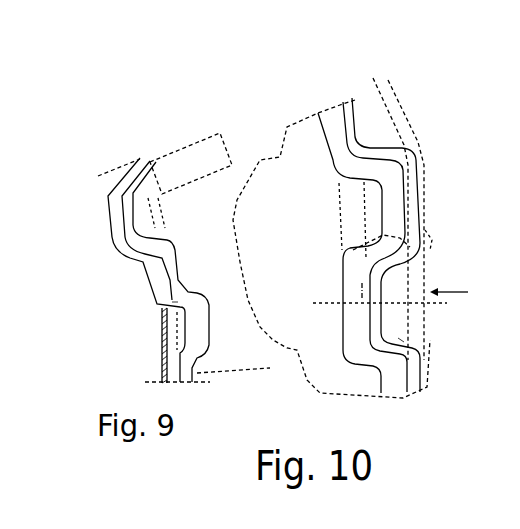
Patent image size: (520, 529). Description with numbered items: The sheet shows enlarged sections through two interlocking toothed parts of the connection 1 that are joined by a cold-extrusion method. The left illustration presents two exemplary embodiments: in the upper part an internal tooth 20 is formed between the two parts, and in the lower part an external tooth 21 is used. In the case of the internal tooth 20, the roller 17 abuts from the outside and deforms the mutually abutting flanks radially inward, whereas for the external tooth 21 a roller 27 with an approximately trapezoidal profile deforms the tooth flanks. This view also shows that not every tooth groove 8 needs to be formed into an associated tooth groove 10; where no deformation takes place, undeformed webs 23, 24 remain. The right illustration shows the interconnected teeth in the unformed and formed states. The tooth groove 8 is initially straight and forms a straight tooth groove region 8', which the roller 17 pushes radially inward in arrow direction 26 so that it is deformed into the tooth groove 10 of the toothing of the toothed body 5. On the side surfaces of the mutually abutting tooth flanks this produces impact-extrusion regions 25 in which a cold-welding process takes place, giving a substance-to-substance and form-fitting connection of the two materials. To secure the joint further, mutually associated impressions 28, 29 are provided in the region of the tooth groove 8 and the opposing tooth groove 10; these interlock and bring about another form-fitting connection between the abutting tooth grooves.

In FIG. 9, the sealing arrangement 1 is at (178, 249).
In FIG. 10, the sealing arrangement 1 is at (418, 176).
In FIG. 9, the toothed body 5 is at (147, 279).
In FIG. 10, the toothed body 5 is at (362, 360).
In FIG. 10, the tooth groove 8 is at (354, 258).
In FIG. 10, the straight tooth groove region 8' is at (436, 219).
In FIG. 10, the tooth groove 10 is at (343, 316).
In FIG. 9, the roller 17 is at (190, 162).
In FIG. 9, the internal tooth 20 is at (118, 252).
In FIG. 9, the external tooth 21 is at (156, 303).
In FIG. 9, the undeformed web 23 is at (158, 338).
In FIG. 10, the undeformed web 23 is at (337, 187).
In FIG. 9, the undeformed web 24 is at (112, 235).
In FIG. 10, the impact-extrusion region 25 is at (430, 229).
In FIG. 10, the arrow direction 26 is at (458, 293).
In FIG. 10, the roller 27 is at (258, 362).
In FIG. 10, the impression 28 is at (408, 336).
In FIG. 10, the impression 29 is at (340, 303).